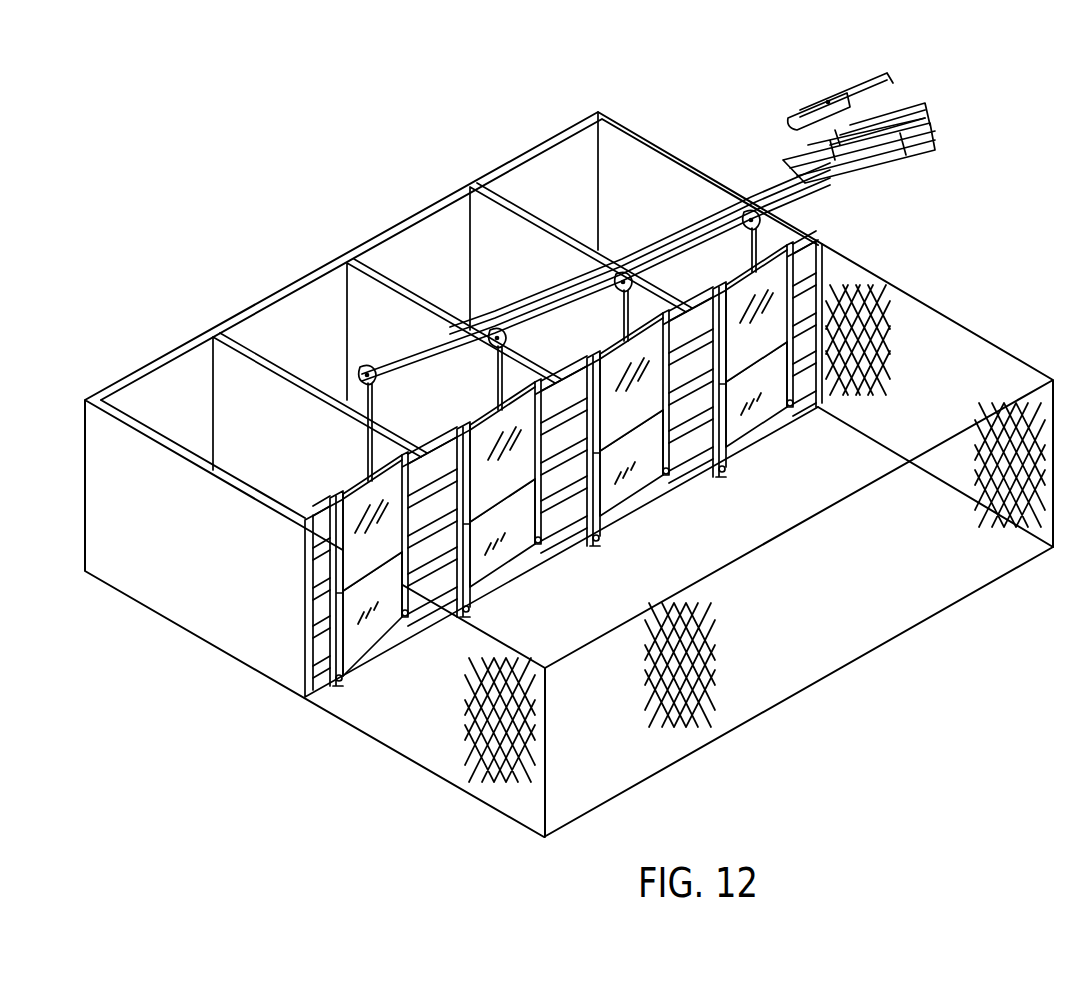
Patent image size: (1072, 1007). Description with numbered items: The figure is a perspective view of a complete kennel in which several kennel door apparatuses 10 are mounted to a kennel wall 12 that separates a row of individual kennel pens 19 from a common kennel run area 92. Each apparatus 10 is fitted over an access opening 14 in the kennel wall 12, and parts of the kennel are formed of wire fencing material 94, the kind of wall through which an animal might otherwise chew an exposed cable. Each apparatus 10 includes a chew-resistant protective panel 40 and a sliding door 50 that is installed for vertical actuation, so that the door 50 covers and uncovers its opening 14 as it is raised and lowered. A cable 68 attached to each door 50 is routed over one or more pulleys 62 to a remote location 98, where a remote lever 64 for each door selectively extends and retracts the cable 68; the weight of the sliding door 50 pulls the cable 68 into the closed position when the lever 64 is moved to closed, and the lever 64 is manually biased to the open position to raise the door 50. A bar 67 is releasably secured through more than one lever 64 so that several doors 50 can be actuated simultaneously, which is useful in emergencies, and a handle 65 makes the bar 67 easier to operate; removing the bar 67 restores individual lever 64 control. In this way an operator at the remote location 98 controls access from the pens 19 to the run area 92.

The kennel door apparatus 10 is at (375, 688).
The kennel wall 12 is at (315, 592).
The access opening 14 is at (378, 628).
The kennel pen 19 is at (434, 440).
The protective panel 40 is at (614, 369).
The sliding door 50 is at (367, 612).
The pulley 62 is at (366, 366).
The remote lever 64 is at (930, 165).
The handle 65 is at (810, 108).
The bar 67 is at (832, 96).
The cable 68 is at (790, 205).
The common kennel run area 92 is at (680, 578).
The wire fencing material 94 is at (495, 770).
The remote location 98 is at (857, 118).